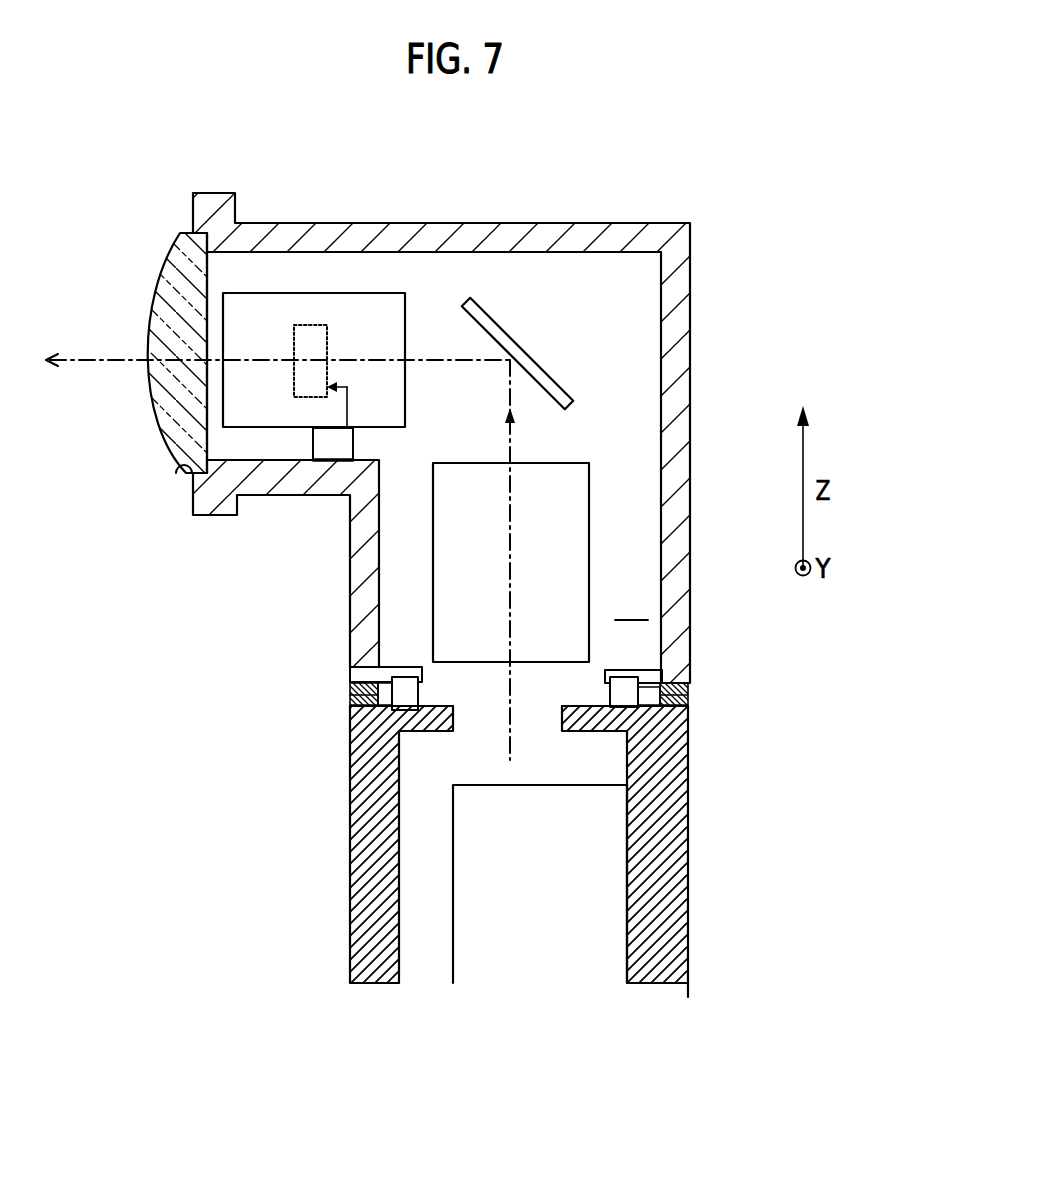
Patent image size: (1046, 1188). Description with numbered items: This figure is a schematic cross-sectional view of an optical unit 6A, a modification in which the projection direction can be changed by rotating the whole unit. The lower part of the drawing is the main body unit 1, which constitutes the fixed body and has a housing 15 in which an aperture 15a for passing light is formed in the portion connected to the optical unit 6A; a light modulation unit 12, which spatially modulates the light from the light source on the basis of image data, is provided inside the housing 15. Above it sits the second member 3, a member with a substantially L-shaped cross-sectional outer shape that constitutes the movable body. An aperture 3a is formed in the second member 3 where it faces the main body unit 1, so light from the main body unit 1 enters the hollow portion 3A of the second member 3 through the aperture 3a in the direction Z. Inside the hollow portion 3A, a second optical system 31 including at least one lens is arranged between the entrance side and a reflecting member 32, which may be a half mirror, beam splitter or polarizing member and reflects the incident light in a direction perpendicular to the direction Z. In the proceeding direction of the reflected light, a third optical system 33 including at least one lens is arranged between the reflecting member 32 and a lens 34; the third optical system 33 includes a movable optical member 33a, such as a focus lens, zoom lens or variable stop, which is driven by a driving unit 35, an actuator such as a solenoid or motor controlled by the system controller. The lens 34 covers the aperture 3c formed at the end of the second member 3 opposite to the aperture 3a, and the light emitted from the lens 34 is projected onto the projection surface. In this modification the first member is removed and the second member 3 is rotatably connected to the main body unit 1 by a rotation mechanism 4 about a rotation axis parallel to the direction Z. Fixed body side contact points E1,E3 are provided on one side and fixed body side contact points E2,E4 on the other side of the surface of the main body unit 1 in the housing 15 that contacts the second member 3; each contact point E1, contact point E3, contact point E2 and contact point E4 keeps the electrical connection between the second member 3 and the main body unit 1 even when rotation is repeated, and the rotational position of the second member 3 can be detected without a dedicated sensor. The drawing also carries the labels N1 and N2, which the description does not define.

The main body unit 1 is at (524, 851).
The light modulation unit 12 is at (463, 900).
The housing 15 is at (673, 832).
The aperture 15a is at (452, 712).
The second member 3 is at (682, 374).
The hollow portion 3A is at (631, 605).
The aperture 3a is at (615, 669).
The aperture 3c is at (173, 473).
The second optical system 31 is at (568, 490).
The reflecting member 32 is at (467, 299).
The third optical system 33 is at (314, 368).
The optical member 33a is at (310, 398).
The lens 34 is at (168, 416).
The driving unit 35 is at (338, 463).
The rotation mechanism 4 is at (402, 687).
The optical unit 6A is at (495, 417).
The first gap N1 is at (352, 690).
The second gap N2 is at (688, 690).
The fixed body side contact point E1 is at (325, 739).
The fixed body side contact point E3 is at (325, 739).
The fixed body side contact points E1,E3 is at (352, 703).
The fixed body side contact point E2 is at (720, 722).
The fixed body side contact point E4 is at (720, 722).
The fixed body side contact points E2,E4 is at (688, 702).